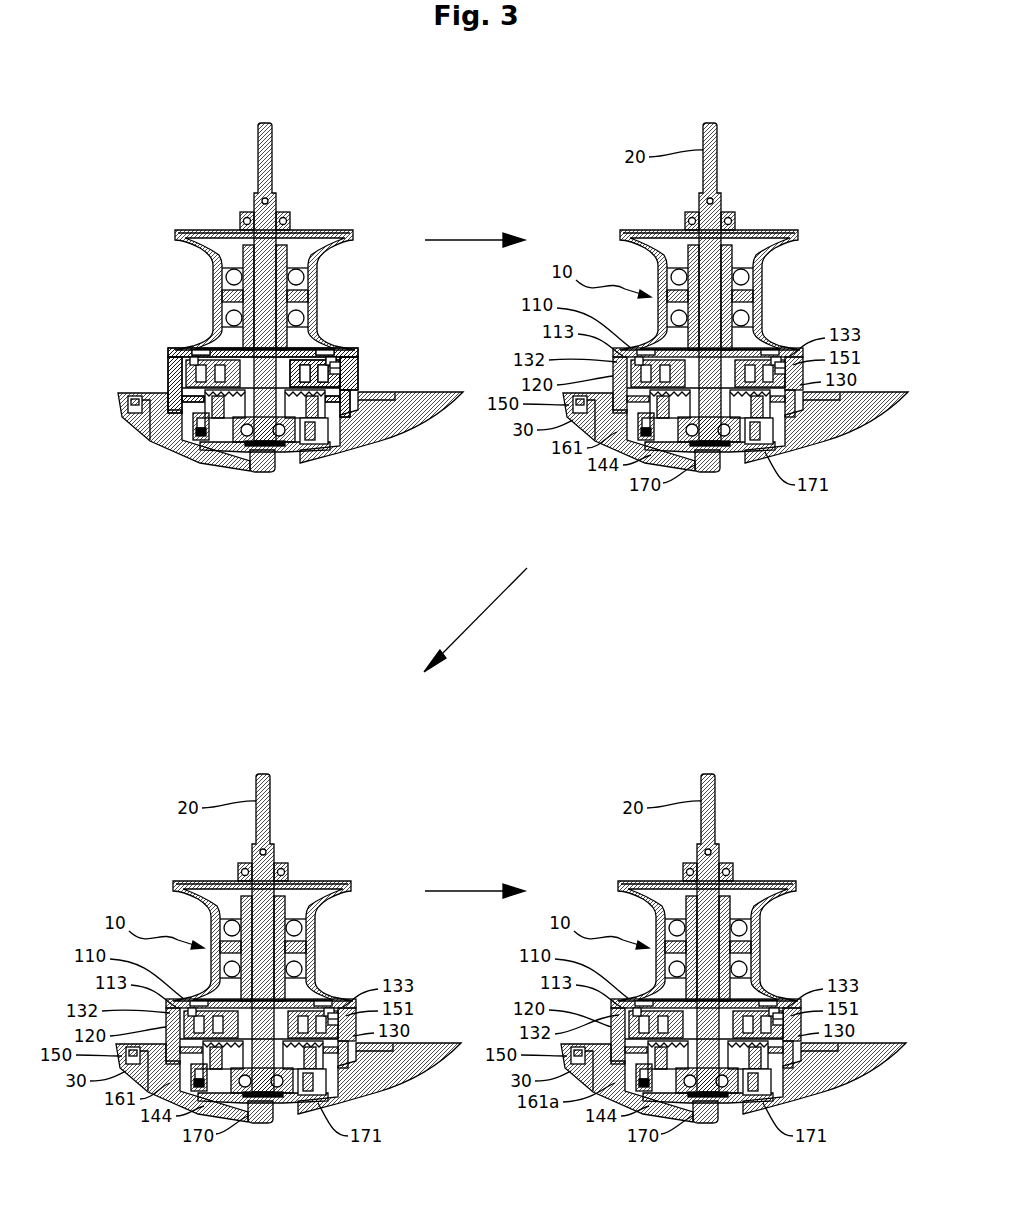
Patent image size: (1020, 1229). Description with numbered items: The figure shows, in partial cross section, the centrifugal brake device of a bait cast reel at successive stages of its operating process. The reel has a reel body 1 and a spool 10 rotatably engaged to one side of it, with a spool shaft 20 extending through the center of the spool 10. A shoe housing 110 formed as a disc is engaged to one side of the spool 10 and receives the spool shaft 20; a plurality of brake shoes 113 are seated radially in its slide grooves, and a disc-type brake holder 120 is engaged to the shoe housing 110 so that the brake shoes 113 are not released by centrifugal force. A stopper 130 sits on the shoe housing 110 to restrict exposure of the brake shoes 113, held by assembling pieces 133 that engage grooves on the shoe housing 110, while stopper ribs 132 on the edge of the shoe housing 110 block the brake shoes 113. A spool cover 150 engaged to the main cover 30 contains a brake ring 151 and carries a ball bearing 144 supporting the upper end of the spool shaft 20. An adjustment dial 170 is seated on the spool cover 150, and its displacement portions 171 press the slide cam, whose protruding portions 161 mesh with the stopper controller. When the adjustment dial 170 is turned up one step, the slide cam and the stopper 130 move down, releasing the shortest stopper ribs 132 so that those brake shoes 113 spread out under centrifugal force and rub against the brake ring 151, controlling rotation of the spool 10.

The reel body 1 is at (130, 142).
The spool 10 is at (196, 294).
The spool shaft 20 is at (258, 150).
The main cover 30 is at (128, 420).
The shoe housing 110 is at (186, 348).
The brake shoes 113 is at (178, 356).
The brake holder 120 is at (168, 376).
The stopper 130 is at (355, 385).
The stopper ribs 132 is at (172, 362).
The assembling pieces 133 is at (345, 356).
The ball bearing 144 is at (206, 455).
The spool cover 150 is at (124, 405).
The brake ring 151 is at (348, 365).
The protruding portions 161 is at (172, 432).
The adjustment dial 170 is at (250, 465).
The displacement portions 171 is at (320, 452).